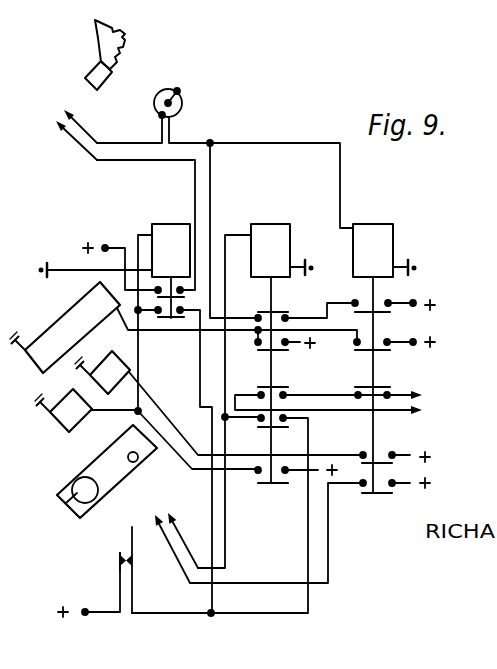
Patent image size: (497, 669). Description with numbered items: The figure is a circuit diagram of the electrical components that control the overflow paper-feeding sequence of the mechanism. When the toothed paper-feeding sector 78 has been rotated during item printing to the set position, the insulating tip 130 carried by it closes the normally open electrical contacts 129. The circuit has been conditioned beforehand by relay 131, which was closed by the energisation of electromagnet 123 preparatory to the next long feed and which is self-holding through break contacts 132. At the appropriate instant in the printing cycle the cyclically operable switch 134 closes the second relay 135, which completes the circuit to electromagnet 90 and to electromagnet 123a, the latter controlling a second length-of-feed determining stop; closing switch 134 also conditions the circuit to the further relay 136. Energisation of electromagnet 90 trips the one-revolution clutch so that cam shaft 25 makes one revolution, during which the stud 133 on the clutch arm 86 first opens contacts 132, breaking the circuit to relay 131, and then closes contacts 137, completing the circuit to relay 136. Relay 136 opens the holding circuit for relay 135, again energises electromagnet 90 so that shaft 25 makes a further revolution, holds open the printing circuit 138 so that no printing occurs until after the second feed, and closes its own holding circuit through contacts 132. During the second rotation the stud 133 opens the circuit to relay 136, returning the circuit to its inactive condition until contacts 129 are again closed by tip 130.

The toothed paper-feeding sector 78 is at (113, 28).
The tip 130 is at (107, 76).
The normally open electrical contacts 129 is at (75, 121).
The cyclically operable switch 134 is at (188, 110).
The relay 131 is at (180, 212).
The further relay 136 is at (275, 228).
The second relay 135 is at (388, 241).
The electromagnet 90 is at (71, 316).
The electromagnet 123a is at (118, 365).
The electromagnet 123 is at (66, 431).
The clutch arm 86 is at (103, 456).
The stud 133 is at (138, 461).
The cam shaft 25 is at (93, 497).
The contacts 137 is at (188, 503).
The break contacts 132 is at (114, 570).
The circuit 138 is at (426, 406).